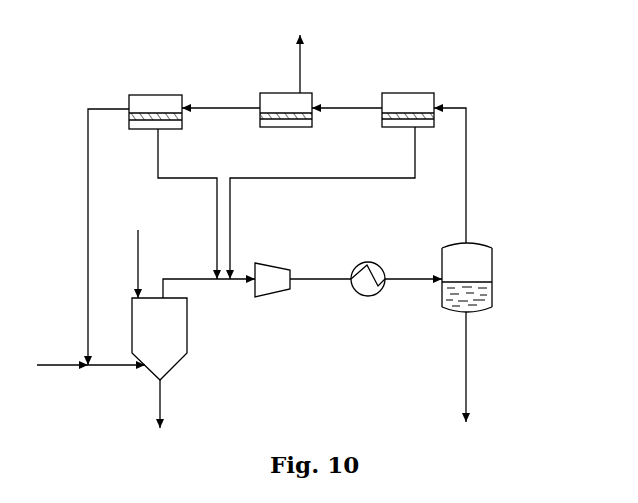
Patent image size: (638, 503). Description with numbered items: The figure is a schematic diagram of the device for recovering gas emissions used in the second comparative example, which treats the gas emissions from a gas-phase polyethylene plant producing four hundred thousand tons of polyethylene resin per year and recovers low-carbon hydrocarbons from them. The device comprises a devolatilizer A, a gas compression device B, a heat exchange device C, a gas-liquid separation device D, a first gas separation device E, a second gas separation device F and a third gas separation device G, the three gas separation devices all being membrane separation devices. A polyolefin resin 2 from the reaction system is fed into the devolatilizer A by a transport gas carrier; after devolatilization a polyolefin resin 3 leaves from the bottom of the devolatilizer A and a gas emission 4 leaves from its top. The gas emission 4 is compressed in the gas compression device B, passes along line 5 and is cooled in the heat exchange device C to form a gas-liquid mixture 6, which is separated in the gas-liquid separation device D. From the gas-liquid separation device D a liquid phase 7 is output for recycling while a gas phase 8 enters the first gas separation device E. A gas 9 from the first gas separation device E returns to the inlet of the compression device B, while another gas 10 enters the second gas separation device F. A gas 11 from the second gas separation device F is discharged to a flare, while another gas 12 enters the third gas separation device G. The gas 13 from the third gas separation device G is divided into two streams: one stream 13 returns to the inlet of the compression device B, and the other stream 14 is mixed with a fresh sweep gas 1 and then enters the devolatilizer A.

The fresh sweep gas 1 is at (75, 365).
The polyolefin resin 2 is at (137, 242).
The polyolefin resin 3 is at (158, 412).
The gas emission 4 is at (212, 276).
The compressed gas stream 5 is at (337, 277).
The gas-liquid mixture 6 is at (428, 275).
The liquid phase 7 is at (466, 383).
The gas phase 8 is at (465, 175).
The gas 9 is at (373, 176).
The gas 10 is at (358, 104).
The gas 11 is at (298, 50).
The gas 12 is at (230, 106).
The gas 13 is at (158, 162).
The stream 14 is at (104, 108).
The devolatilizer A is at (187, 330).
The gas compression device B is at (272, 262).
The heat exchange device C is at (365, 261).
The gas-liquid separation device D is at (493, 268).
The first gas separation device E is at (412, 92).
The second gas separation device F is at (290, 92).
The third gas separation device G is at (158, 93).